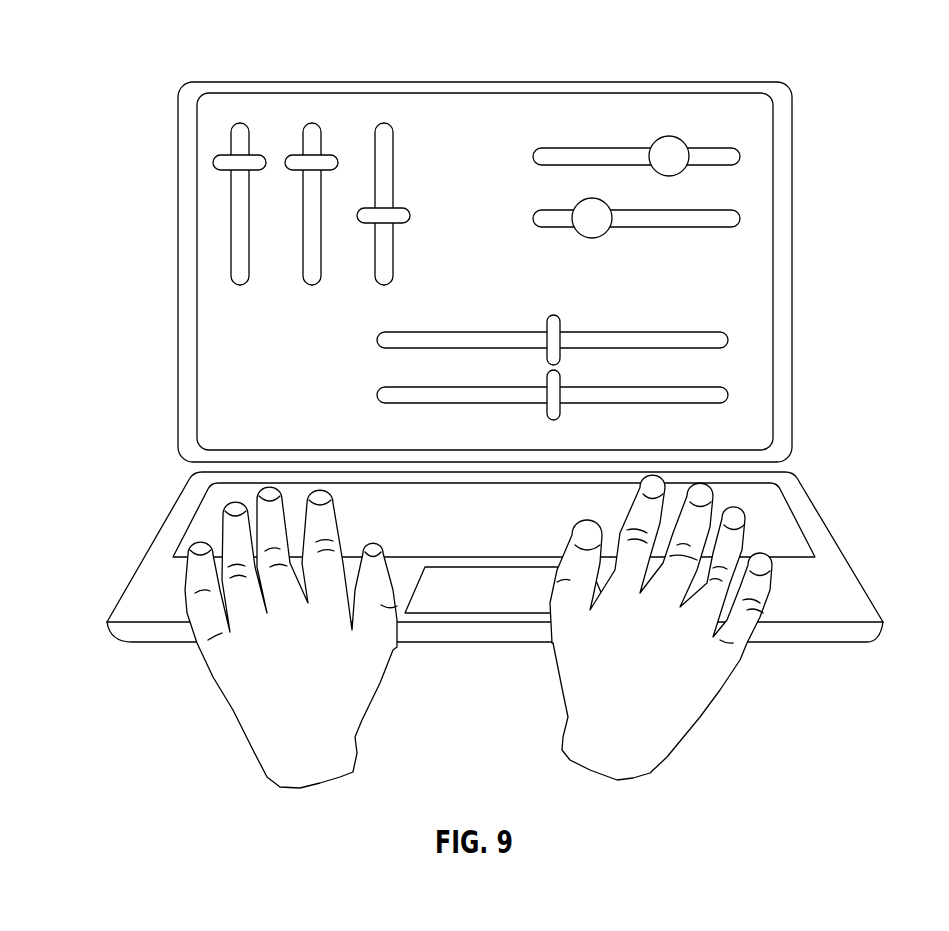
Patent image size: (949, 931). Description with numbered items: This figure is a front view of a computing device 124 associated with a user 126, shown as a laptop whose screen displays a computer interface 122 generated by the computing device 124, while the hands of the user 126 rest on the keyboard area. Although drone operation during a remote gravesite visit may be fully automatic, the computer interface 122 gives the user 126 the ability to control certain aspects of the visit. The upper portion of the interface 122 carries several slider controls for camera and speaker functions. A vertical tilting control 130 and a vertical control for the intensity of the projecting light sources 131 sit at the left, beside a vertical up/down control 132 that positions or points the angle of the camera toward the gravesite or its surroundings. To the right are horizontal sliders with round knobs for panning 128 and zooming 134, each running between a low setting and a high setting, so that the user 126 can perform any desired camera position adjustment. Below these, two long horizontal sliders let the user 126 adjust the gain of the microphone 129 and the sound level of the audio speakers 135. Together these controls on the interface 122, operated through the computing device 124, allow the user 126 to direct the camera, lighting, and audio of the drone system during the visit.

The computer interface 122 is at (757, 252).
The computing device 124 is at (848, 583).
The user 126 is at (717, 687).
The panning control 128 is at (740, 157).
The microphone gain control 129 is at (728, 340).
The tilting control 130 is at (228, 203).
The projecting light source intensity control 131 is at (310, 285).
The up/down control 132 is at (383, 125).
The zooming control 134 is at (740, 220).
The audio speaker sound level control 135 is at (728, 398).